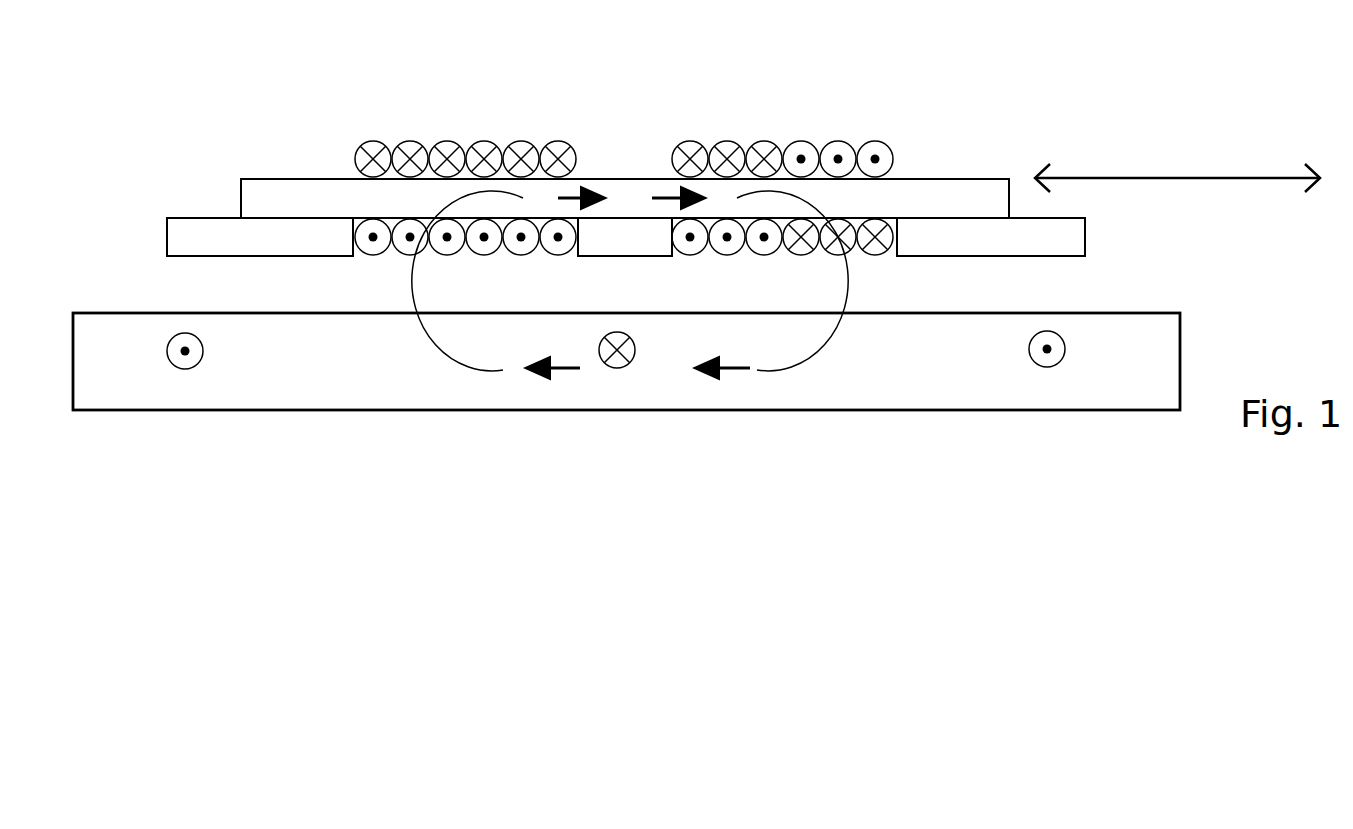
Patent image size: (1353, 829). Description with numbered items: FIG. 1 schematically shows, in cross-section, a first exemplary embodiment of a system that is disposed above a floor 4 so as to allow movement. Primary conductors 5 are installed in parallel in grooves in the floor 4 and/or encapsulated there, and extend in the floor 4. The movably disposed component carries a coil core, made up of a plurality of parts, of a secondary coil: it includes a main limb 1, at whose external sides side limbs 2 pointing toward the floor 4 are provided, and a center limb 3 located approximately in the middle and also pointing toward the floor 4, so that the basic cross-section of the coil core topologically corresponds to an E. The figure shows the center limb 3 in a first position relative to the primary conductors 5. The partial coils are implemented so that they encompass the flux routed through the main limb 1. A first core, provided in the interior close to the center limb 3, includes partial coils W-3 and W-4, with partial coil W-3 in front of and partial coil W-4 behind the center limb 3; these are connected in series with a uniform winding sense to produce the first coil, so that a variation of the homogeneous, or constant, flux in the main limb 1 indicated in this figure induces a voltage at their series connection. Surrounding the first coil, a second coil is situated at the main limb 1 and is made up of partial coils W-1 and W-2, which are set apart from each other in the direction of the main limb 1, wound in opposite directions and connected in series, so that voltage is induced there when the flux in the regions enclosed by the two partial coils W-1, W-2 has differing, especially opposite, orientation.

The main limb 1 is at (953, 198).
The side limb 2 is at (213, 237).
The center limb 3 is at (620, 237).
The floor 4 is at (1140, 352).
The primary conductor 5 is at (215, 397).
The partial coil W-1 is at (358, 132).
The partial coil W-2 is at (913, 133).
The partial coil W-3 is at (542, 102).
The partial coil W-4 is at (713, 131).